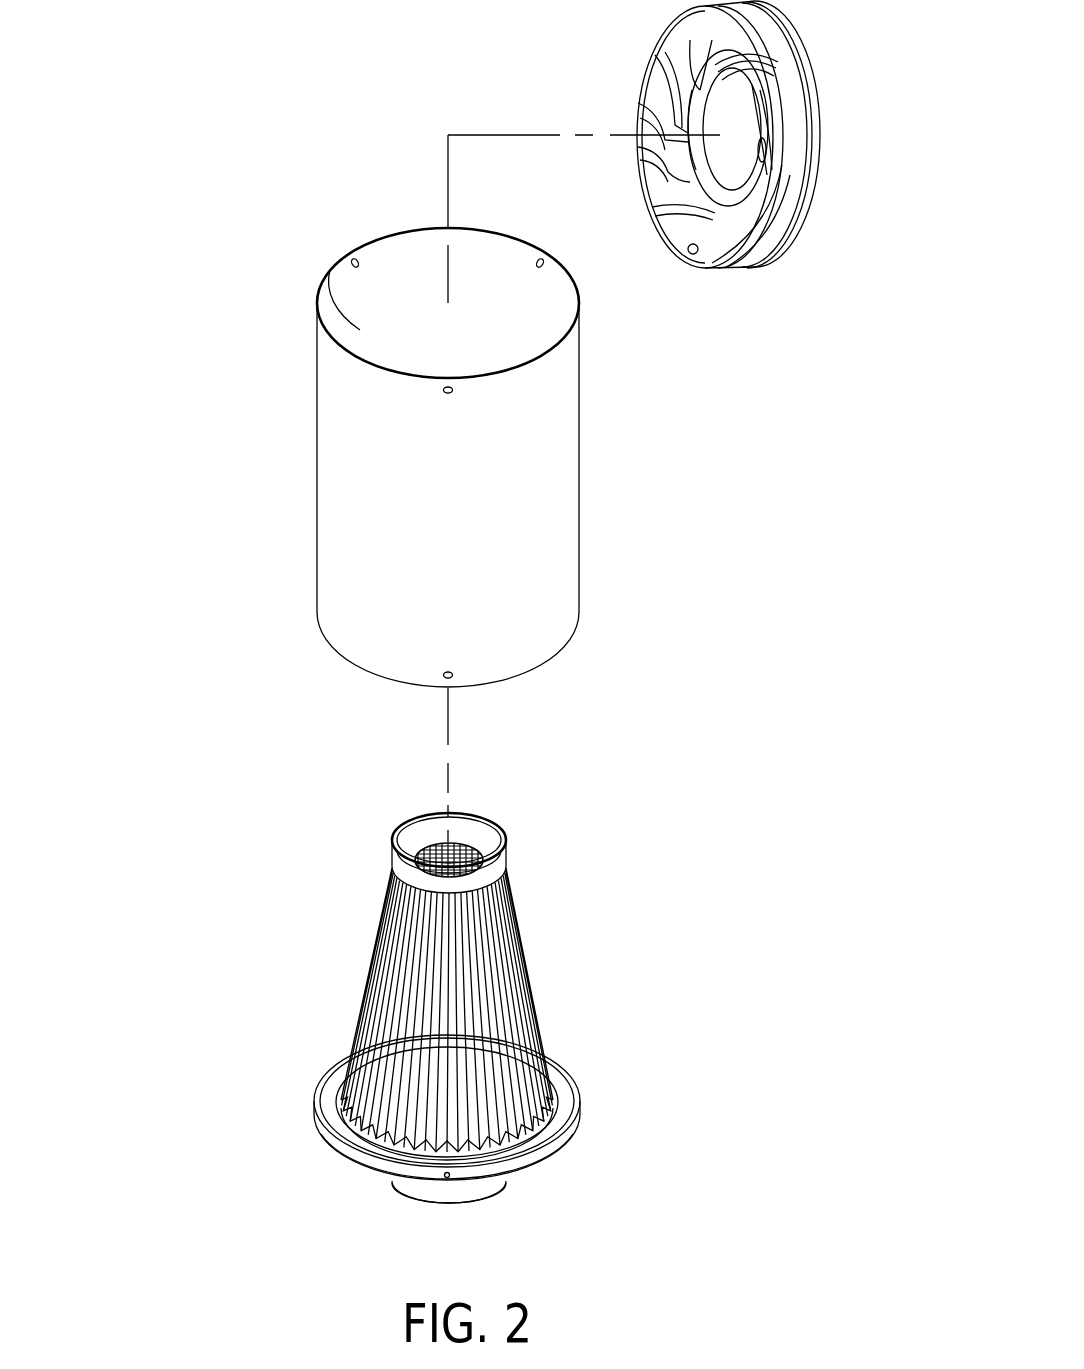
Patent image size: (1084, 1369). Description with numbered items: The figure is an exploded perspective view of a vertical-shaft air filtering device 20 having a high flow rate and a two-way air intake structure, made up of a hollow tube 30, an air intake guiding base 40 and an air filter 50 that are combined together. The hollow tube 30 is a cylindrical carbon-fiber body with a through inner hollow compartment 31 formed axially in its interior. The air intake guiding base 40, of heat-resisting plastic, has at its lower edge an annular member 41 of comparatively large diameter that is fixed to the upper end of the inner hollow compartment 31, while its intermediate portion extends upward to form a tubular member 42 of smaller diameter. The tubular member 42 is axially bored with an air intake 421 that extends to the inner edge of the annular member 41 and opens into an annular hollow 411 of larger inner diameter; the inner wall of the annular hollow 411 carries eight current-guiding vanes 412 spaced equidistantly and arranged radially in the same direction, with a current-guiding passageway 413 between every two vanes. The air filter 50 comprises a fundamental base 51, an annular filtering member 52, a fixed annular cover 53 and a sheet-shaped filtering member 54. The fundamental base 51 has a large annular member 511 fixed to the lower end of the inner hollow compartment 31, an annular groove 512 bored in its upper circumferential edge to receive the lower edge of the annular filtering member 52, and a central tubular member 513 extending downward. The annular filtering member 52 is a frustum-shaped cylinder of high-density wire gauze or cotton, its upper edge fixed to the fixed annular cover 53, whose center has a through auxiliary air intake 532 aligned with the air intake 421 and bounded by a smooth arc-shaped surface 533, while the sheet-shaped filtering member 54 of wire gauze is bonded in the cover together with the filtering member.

The vertical-shaft air filtering device 20 is at (163, 667).
The hollow tube 30 is at (316, 457).
The inner hollow compartment 31 is at (342, 300).
The air intake guiding base 40 is at (800, 228).
The annular member 41 is at (763, 244).
The annular hollow 411 is at (695, 254).
The current-guiding vane 412 is at (660, 68).
The current-guiding passageway 413 is at (650, 110).
The tubular member 42 is at (823, 122).
The air intake 421 is at (768, 165).
The air filter 50 is at (283, 1127).
The fundamental base 51 is at (578, 1130).
The annular member 511 is at (553, 1145).
The annular groove 512 is at (547, 1088).
The tubular member 513 is at (473, 1193).
The annular filtering member 52 is at (527, 950).
The fixed annular cover 53 is at (508, 835).
The auxiliary air intake 532 is at (465, 836).
The smooth arc-shaped surface 533 is at (492, 836).
The sheet-shaped filtering member 54 is at (428, 848).